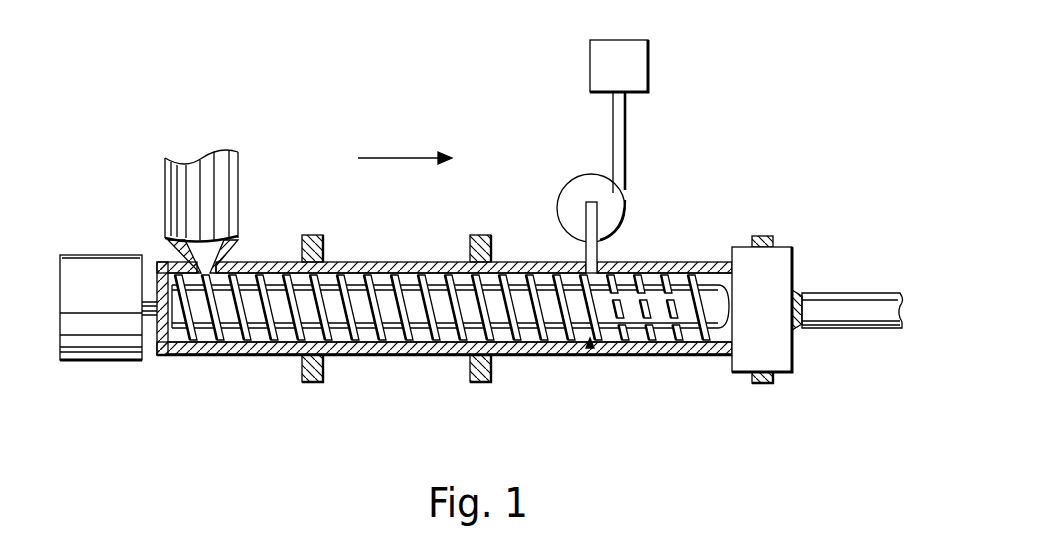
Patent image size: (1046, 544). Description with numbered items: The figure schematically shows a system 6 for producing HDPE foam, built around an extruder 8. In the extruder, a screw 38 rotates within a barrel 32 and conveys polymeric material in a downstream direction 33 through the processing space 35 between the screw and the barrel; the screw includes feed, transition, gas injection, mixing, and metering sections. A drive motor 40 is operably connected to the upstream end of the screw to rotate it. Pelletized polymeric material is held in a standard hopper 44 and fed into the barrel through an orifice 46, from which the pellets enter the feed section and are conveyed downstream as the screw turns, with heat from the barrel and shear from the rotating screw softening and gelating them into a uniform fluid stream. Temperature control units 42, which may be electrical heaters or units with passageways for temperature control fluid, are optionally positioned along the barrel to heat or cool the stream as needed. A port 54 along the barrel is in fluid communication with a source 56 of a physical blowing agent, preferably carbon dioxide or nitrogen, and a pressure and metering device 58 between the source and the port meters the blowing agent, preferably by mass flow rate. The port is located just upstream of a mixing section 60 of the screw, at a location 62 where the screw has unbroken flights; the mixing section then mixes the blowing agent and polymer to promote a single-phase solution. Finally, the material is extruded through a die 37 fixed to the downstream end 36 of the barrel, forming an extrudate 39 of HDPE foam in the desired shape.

The system 6 is at (306, 95).
The extruder 8 is at (450, 262).
The barrel 32 is at (236, 355).
The downstream direction 33 is at (405, 150).
The processing space 35 is at (382, 273).
The downstream end of barrel 36 is at (706, 355).
The die 37 is at (740, 247).
The screw 38 is at (450, 301).
The extrudate 39 is at (840, 293).
The drive motor 40 is at (92, 255).
The temperature control units 42 is at (312, 235).
The hopper 44 is at (190, 175).
The orifice 46 is at (198, 252).
The port 54 is at (584, 258).
The source of physical blowing agent 56 is at (648, 60).
The pressure and metering device 58 is at (580, 188).
The mixing section 60 is at (683, 357).
The location of unbroken flights 62 is at (590, 350).